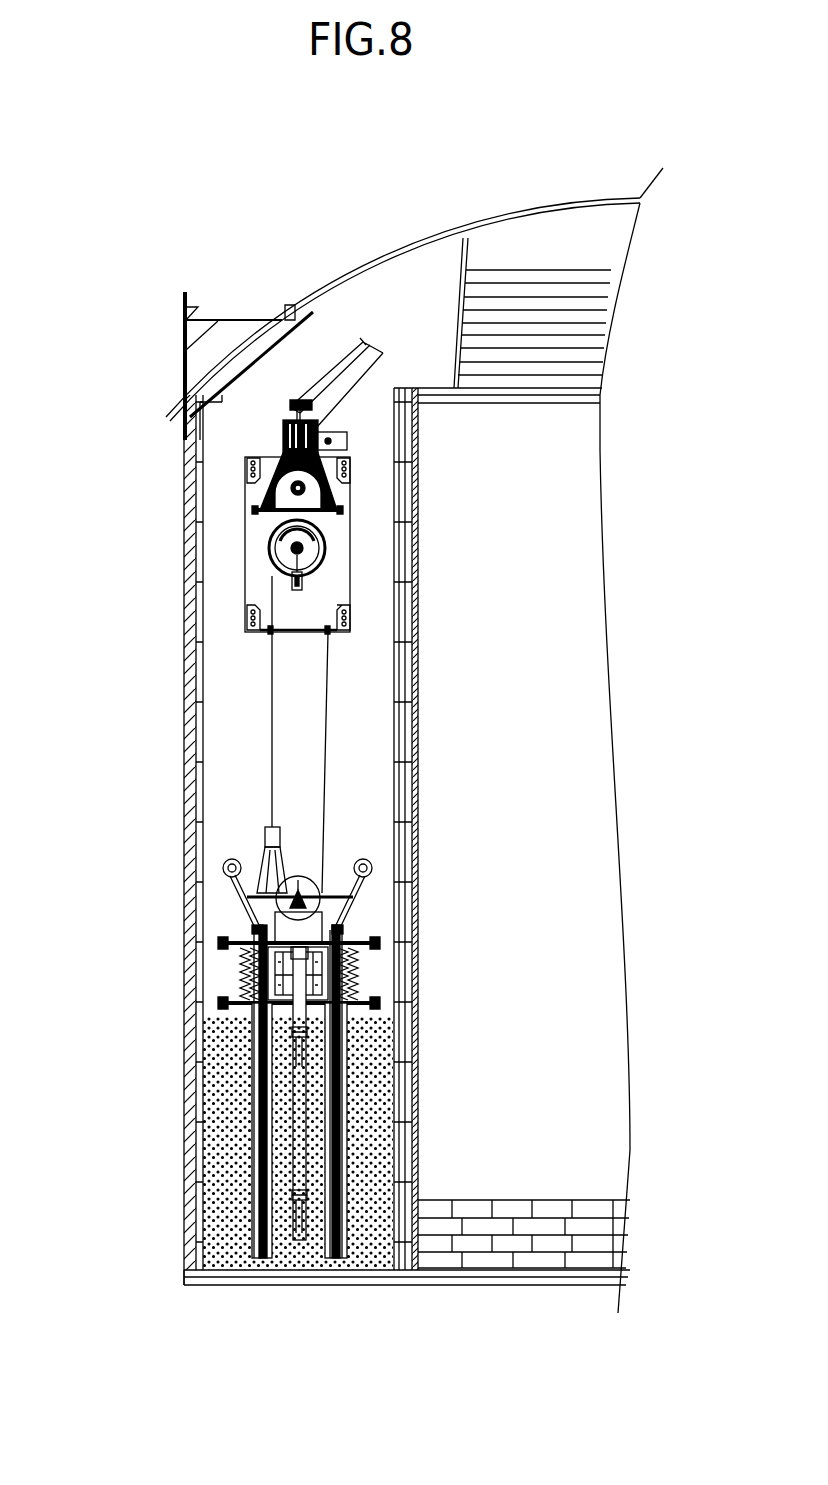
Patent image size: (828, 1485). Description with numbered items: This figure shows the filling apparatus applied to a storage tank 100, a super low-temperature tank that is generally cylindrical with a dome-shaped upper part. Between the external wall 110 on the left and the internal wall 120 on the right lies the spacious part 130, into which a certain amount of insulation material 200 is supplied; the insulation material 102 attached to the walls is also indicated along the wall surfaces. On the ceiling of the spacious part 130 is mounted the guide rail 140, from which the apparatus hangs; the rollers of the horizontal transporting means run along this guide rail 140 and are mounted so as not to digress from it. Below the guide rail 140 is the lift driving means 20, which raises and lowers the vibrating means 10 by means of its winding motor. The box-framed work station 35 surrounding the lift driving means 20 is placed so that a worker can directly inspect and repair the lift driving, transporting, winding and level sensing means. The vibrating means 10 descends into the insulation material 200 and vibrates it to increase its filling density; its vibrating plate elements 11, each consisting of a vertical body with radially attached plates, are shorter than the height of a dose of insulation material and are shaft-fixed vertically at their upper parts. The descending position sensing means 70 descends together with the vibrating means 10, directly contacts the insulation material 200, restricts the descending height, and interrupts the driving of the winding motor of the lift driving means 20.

The storage tank 100 is at (243, 270).
The vibrating means 10 is at (232, 973).
The vibrating plate element 11 is at (258, 1260).
The lift driving means 20 is at (256, 544).
The box-framed work station 35 is at (247, 587).
The descending position sensing means 70 is at (300, 1010).
The insulation material attached to the walls 102 is at (217, 829).
The external wall 110 is at (184, 677).
The internal wall 120 is at (407, 653).
The spacious part 130 is at (240, 758).
The guide rail 140 is at (283, 421).
The insulation material 200 is at (215, 1155).